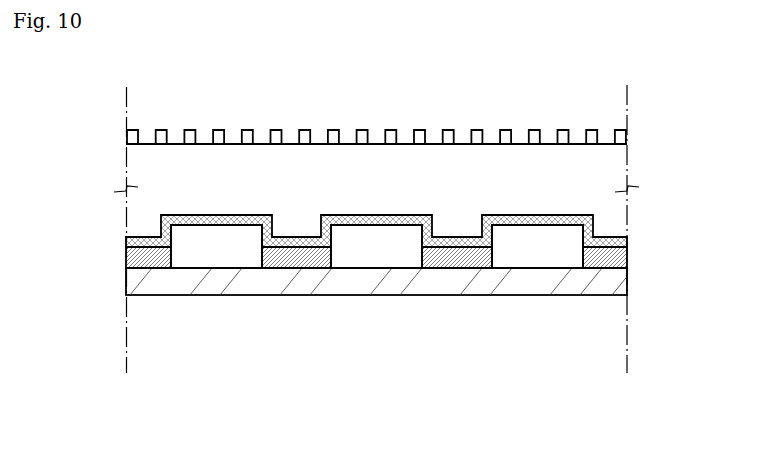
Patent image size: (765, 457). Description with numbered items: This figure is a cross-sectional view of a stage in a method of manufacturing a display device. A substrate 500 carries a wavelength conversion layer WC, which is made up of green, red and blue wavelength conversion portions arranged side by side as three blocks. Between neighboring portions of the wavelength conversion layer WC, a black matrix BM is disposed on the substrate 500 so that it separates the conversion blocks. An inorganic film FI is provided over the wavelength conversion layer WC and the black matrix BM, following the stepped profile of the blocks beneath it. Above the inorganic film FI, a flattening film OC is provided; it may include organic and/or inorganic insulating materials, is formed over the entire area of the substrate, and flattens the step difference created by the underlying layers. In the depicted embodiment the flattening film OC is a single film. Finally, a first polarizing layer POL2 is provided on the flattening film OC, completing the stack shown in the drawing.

The first polarizing layer POL2 is at (127, 137).
The flattening film OC is at (612, 175).
The inorganic film FI is at (593, 223).
The black matrix BM is at (130, 258).
The second substrate 500 is at (625, 280).
The wavelength conversion layer WC is at (377, 322).